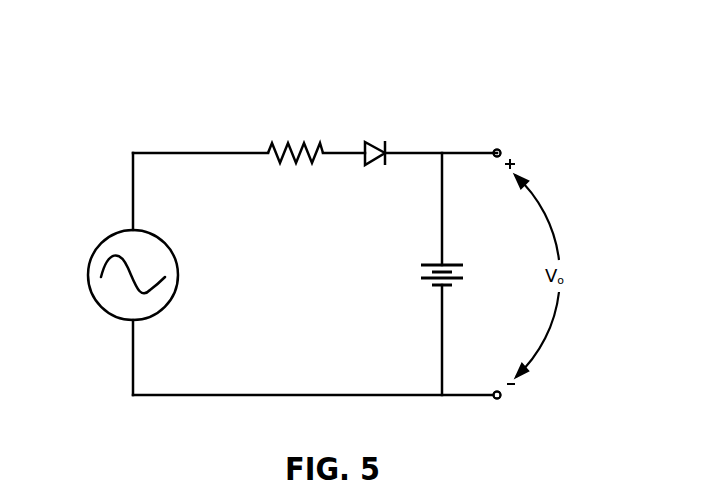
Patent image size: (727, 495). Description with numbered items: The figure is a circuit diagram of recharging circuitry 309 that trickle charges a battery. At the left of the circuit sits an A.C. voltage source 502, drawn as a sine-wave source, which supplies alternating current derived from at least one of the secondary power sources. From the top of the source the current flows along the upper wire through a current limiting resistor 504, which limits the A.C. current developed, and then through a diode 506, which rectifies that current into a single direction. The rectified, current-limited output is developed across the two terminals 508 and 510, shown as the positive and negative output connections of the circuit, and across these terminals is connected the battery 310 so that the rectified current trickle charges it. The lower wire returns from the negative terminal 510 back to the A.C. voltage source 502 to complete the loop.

The recharging circuitry 309 is at (107, 124).
The A.C. voltage source 502 is at (100, 240).
The current limiting resistor 504 is at (302, 144).
The diode 506 is at (386, 144).
The battery 310 is at (424, 270).
The terminal 508 is at (501, 152).
The terminal 510 is at (501, 398).